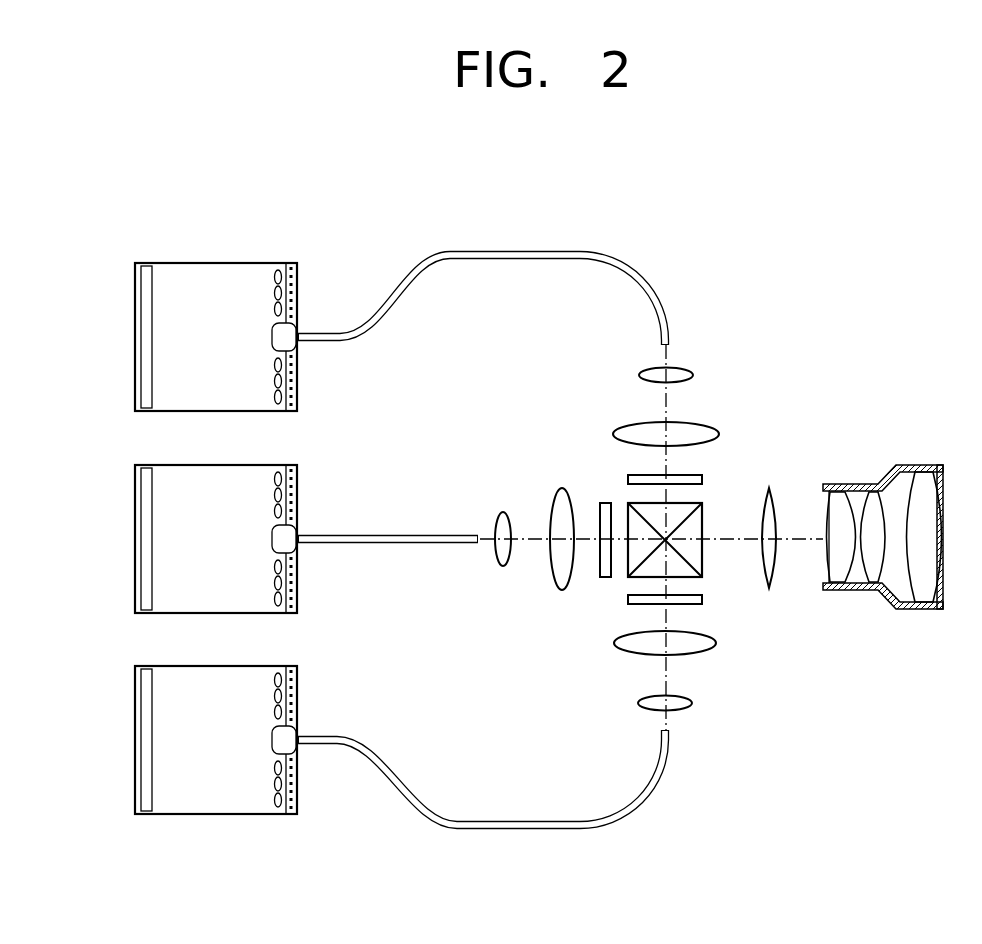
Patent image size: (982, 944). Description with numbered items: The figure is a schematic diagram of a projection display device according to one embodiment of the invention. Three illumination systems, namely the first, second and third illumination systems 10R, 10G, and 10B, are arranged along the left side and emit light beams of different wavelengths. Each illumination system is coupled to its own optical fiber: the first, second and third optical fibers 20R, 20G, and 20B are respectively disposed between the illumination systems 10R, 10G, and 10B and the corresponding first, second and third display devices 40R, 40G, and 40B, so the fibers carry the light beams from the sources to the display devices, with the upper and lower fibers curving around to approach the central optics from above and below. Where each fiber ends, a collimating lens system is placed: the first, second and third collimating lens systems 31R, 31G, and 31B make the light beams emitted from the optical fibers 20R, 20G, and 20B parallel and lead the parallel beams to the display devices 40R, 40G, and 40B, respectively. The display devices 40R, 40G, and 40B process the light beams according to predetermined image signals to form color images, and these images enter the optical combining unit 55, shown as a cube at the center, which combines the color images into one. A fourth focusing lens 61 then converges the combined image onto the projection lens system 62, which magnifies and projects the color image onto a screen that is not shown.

The first illumination system 10R is at (135, 337).
The second illumination system 10G is at (135, 540).
The third illumination system 10B is at (135, 740).
The first optical fiber 20R is at (548, 252).
The second optical fiber 20G is at (412, 534).
The third optical fiber 20B is at (428, 818).
The first collimating lens system 31R is at (727, 363).
The second collimating lens system 31G is at (575, 481).
The third collimating lens system 31B is at (604, 635).
The first display device 40R is at (703, 480).
The second display device 40G is at (600, 572).
The third display device 40B is at (697, 603).
The optical combining unit 55 is at (703, 565).
The fourth focusing lens 61 is at (775, 513).
The projection lens system 62 is at (903, 610).